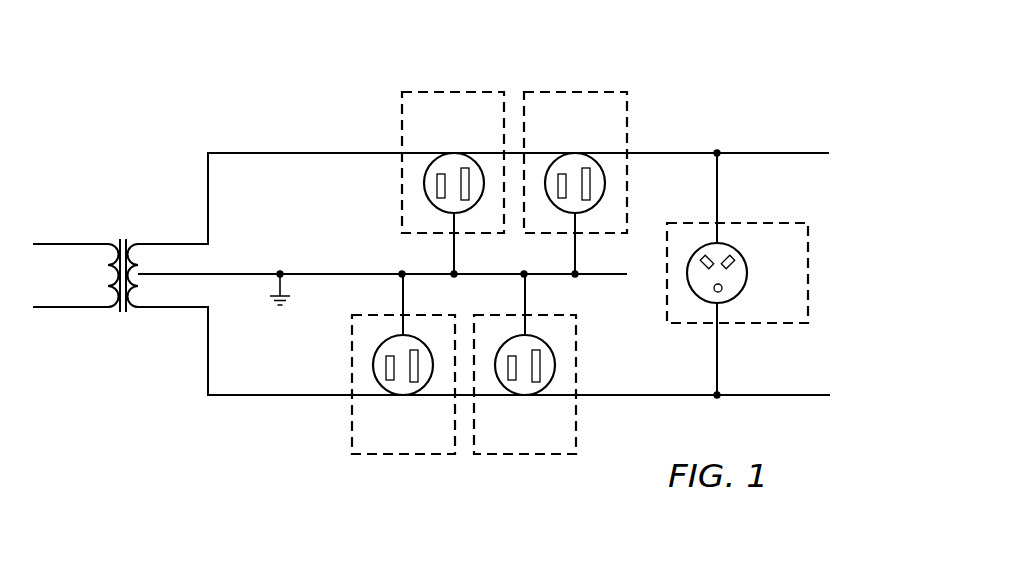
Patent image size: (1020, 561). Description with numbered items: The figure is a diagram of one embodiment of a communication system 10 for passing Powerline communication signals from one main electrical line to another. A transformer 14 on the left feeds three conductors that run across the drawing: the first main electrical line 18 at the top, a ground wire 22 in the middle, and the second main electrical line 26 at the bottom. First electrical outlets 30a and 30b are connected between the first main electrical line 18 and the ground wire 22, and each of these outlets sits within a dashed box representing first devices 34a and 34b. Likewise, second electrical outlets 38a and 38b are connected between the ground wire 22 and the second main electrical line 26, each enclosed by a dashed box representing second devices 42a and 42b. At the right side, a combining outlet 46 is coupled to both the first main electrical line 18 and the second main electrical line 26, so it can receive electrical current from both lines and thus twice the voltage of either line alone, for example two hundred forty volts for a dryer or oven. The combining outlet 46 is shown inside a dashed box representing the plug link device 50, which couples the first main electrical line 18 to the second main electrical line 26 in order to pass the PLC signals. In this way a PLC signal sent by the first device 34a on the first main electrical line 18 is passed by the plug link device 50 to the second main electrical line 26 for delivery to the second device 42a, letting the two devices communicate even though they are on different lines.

The communication system 10 is at (165, 79).
The transformer 14 is at (120, 318).
The first main electrical line 18 is at (362, 152).
The ground wire 22 is at (362, 273).
The second main electrical line 26 is at (270, 396).
The first electrical outlet 30a is at (423, 182).
The first electrical outlet 30b is at (606, 183).
The first device 34a is at (466, 87).
The first device 34b is at (586, 87).
The second electrical outlet 38a is at (373, 362).
The second electrical outlet 38b is at (555, 368).
The second device 42a is at (414, 459).
The second device 42b is at (534, 459).
The combining outlet 46 is at (747, 272).
The plug link device 50 is at (767, 218).